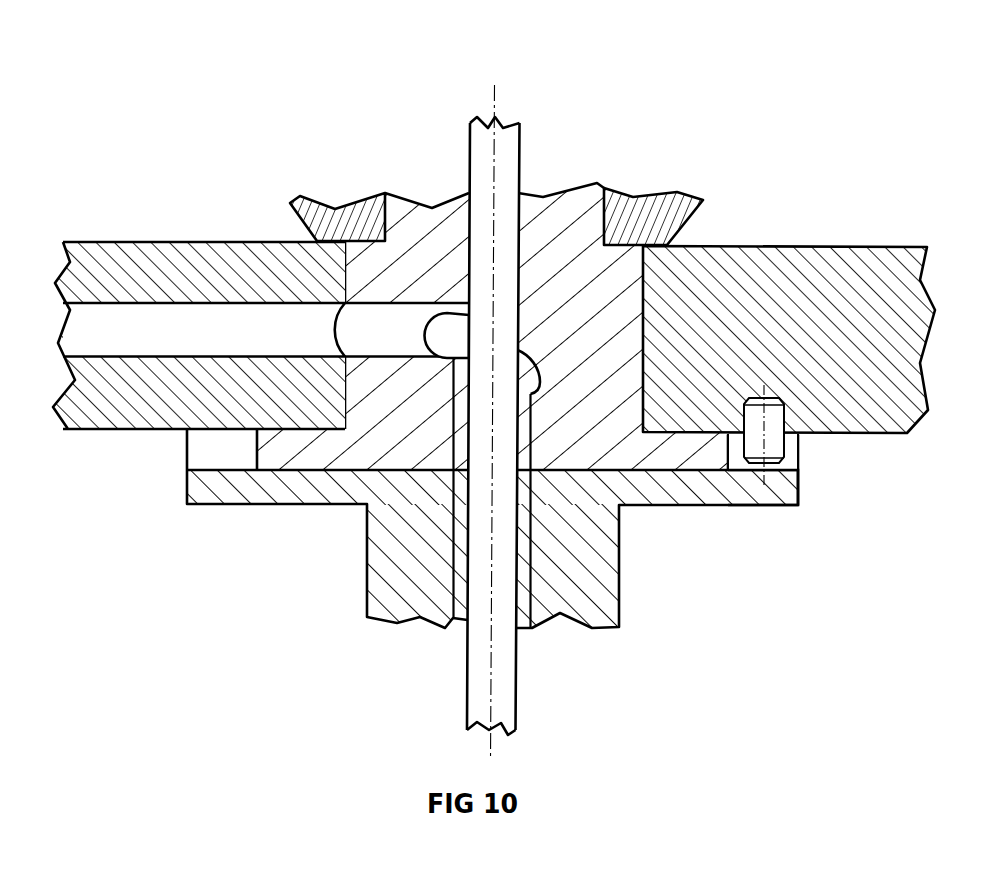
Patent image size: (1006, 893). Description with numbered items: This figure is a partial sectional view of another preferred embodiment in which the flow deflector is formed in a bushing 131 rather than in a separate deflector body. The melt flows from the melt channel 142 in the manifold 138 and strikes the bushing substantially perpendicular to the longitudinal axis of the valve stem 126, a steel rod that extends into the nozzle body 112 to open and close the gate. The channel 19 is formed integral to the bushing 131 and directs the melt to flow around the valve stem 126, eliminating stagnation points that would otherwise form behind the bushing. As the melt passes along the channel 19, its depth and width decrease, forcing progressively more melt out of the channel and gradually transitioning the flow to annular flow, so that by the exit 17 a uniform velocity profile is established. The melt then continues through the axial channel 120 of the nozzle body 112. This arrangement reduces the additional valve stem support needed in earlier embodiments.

The exit 17 is at (460, 408).
The channel 19 is at (422, 328).
The nozzle body 112 is at (742, 493).
The axial channel 120 is at (522, 600).
The valve stem 126 is at (507, 157).
The bushing 131 is at (417, 227).
The manifold 138 is at (785, 283).
The melt channel 142 is at (200, 342).